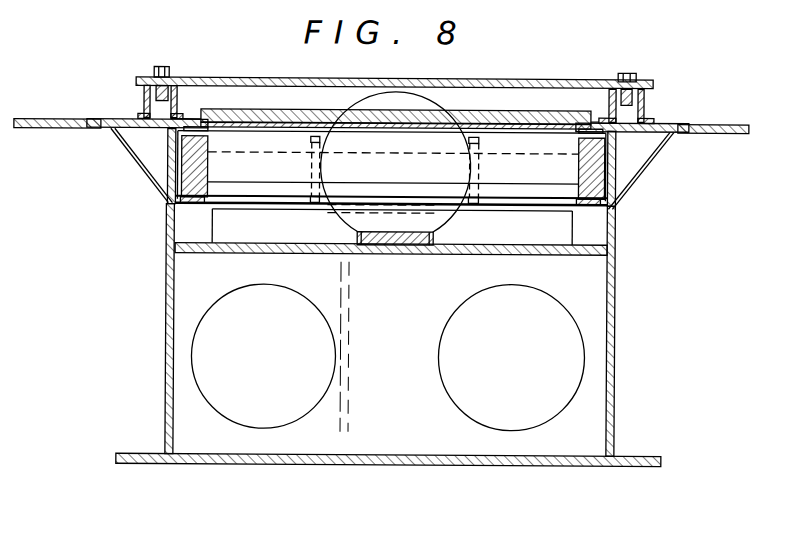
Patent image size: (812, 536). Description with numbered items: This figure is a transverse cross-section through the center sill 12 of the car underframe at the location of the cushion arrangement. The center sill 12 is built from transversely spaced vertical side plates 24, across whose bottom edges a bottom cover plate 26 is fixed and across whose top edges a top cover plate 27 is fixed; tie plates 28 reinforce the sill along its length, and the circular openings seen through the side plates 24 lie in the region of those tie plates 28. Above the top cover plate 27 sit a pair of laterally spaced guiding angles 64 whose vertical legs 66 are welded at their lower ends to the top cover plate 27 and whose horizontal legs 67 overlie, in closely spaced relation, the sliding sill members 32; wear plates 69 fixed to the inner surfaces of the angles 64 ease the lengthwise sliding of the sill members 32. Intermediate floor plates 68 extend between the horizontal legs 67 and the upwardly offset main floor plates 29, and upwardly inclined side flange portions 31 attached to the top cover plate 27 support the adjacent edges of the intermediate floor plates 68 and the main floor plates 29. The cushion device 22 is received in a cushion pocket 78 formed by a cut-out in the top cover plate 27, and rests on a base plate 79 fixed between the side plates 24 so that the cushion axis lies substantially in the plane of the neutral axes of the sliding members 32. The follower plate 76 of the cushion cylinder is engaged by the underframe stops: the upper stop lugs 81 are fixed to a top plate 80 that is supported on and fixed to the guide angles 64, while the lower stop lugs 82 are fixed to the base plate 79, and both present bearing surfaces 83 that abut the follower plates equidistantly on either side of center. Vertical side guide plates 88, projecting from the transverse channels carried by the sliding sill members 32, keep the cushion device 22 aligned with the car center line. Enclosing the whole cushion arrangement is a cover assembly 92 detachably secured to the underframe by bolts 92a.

The center sill 12 is at (570, 440).
The cushion device 22 is at (456, 226).
The side plates 24 is at (164, 333).
The bottom cover plate 26 is at (435, 465).
The top cover plate 27 is at (183, 217).
The tie plates 28 is at (327, 435).
The main floor plates 29 is at (733, 122).
The side flange portions 31 is at (116, 146).
The sill members 32 is at (176, 202).
The guiding angles 64 is at (172, 139).
The vertical legs 66 is at (167, 181).
The horizontal legs 67 is at (192, 121).
The intermediate floor plates 68 is at (117, 120).
The wear plates 69 is at (207, 150).
The follower plate 76 is at (323, 210).
The cushion pocket 78 is at (272, 202).
The base plate 79 is at (598, 257).
The top plate 80 is at (239, 115).
The upper stop lugs 81 is at (332, 110).
The lower stop lugs 82 is at (388, 245).
The bearing surfaces 83 is at (440, 98).
The side guide plates 88 is at (321, 113).
The cover assembly 92 is at (522, 78).
The bolts 92a is at (159, 68).